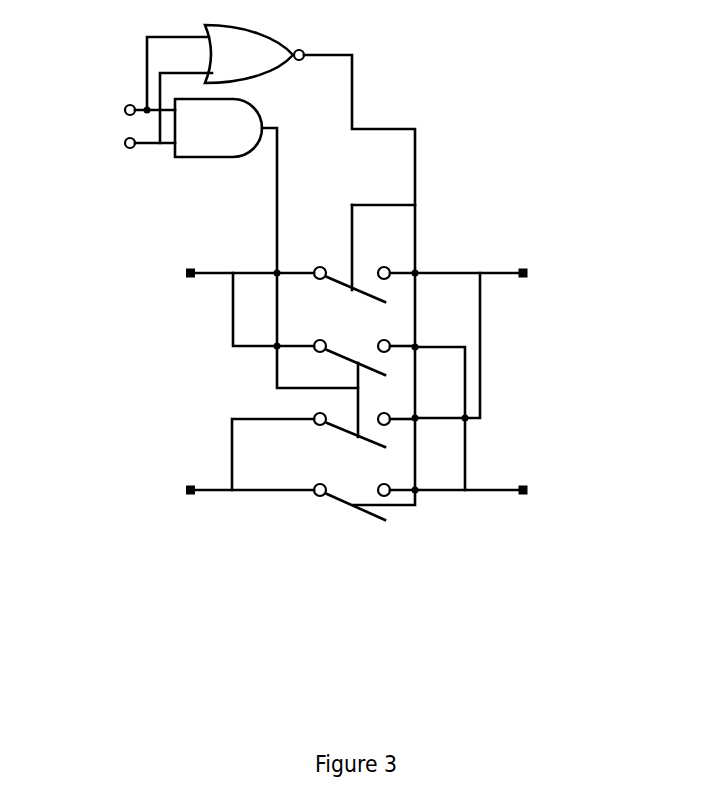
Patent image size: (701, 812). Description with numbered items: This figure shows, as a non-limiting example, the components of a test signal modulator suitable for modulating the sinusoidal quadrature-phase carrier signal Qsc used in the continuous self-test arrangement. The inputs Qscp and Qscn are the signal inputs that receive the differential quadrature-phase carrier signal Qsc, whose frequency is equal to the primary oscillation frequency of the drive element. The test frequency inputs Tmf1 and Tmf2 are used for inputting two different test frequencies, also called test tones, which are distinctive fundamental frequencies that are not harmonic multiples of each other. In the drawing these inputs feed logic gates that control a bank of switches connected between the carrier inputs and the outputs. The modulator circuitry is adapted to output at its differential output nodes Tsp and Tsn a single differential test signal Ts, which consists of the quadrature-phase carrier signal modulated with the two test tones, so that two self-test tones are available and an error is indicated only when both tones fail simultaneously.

The test frequency input Tmf1 is at (99, 101).
The test frequency input Tmf2 is at (99, 142).
The signal input Qscp is at (218, 306).
The quadrature-phase carrier signal Qsc is at (191, 360).
The signal input Qscn is at (214, 460).
The differential output node Tsp is at (485, 337).
The test signal Ts is at (516, 417).
The differential output node Tsn is at (485, 487).